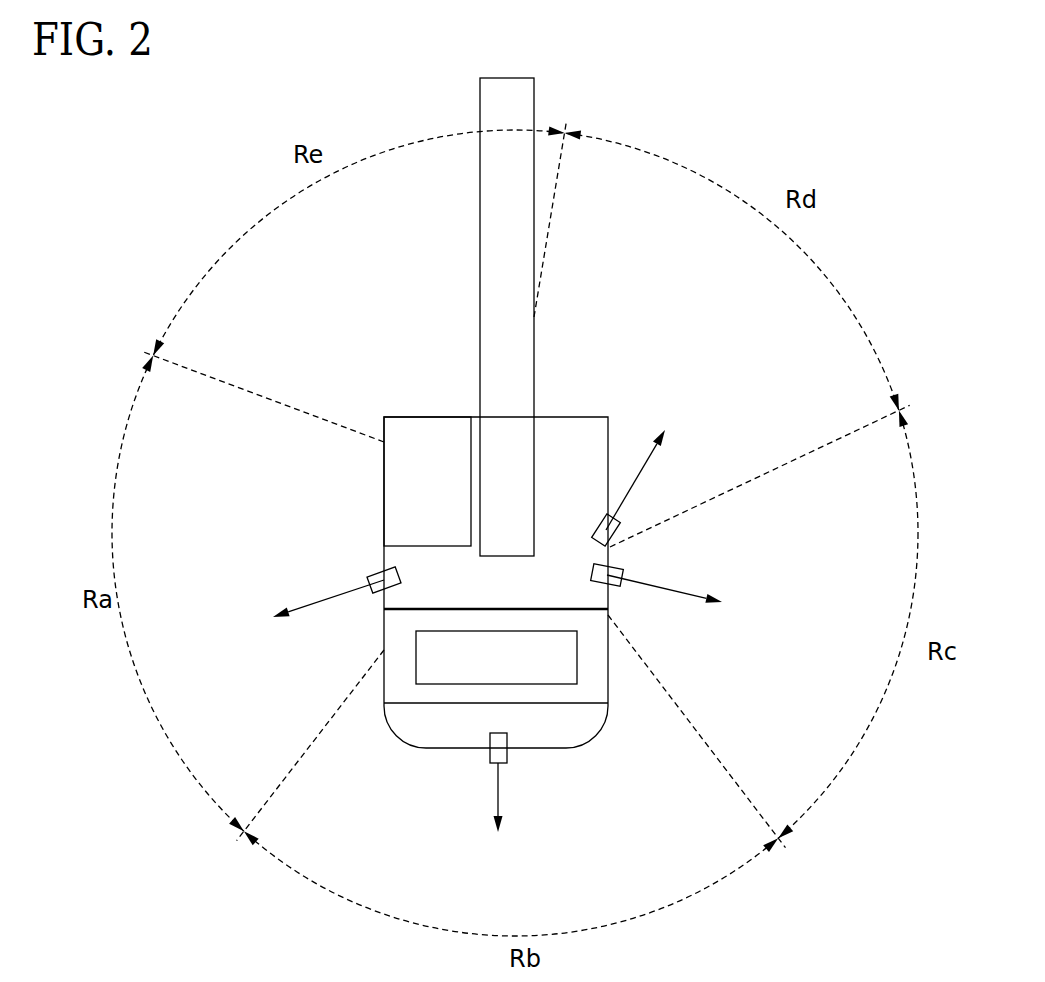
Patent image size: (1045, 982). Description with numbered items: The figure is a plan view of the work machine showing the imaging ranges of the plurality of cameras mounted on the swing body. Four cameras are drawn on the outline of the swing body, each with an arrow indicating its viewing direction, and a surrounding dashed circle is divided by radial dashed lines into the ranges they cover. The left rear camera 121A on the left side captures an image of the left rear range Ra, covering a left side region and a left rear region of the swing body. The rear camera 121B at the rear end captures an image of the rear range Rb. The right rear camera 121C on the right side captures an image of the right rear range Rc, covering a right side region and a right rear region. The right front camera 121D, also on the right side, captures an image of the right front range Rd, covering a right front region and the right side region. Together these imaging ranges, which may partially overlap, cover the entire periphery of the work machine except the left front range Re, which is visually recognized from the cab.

The left rear camera 121A is at (376, 571).
The rear camera 121B is at (489, 763).
The right rear camera 121C is at (612, 586).
The right front camera 121D is at (616, 519).